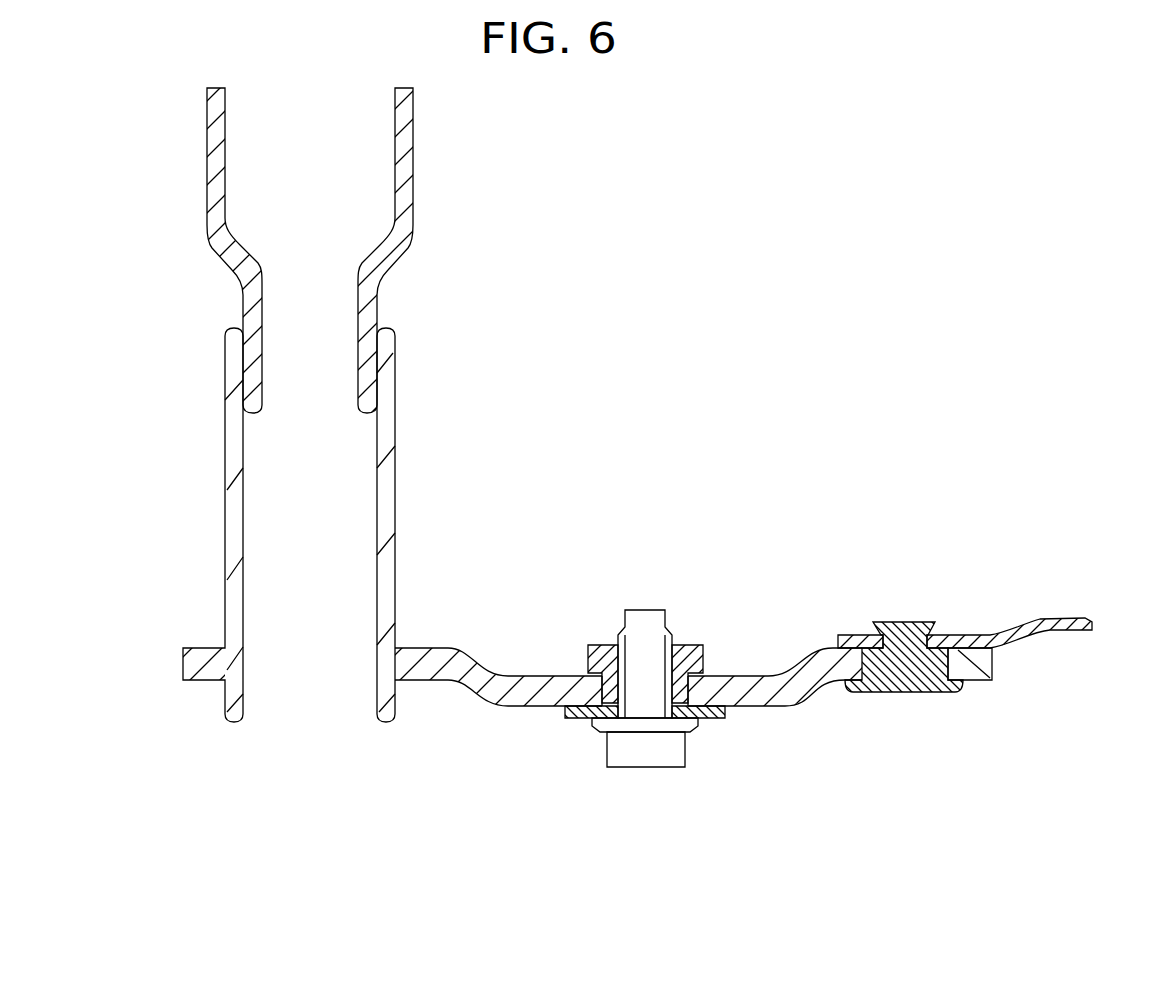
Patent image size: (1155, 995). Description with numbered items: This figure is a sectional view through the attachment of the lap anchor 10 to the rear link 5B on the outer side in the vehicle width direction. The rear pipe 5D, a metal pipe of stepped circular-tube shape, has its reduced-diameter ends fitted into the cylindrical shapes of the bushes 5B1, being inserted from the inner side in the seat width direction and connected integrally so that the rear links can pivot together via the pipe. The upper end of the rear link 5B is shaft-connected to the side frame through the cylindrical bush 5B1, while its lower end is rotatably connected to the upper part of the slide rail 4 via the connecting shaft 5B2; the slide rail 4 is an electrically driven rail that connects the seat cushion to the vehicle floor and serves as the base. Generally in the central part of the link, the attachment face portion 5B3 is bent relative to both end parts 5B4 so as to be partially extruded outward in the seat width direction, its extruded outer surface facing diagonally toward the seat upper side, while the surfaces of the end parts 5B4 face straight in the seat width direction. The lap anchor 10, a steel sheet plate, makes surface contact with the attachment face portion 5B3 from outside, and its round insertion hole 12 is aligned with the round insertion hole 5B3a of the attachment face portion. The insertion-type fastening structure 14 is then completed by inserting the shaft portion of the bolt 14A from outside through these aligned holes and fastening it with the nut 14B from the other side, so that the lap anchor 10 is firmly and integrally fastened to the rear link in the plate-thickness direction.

The rear pipe 5D is at (400, 147).
The cylindrical bush 5B1 is at (387, 498).
The rear link 5B is at (628, 682).
The end parts 5B4 is at (440, 668).
The attachment face portion 5B3 is at (728, 690).
The insertion hole 5B3a is at (611, 690).
The insertion-type fastening structure 14 is at (662, 603).
The bolt 14A is at (645, 612).
The nut 14B is at (688, 648).
The lap anchor 10 is at (573, 718).
The insertion hole 12 is at (628, 718).
The connecting shaft 5B2 is at (905, 640).
The slide rail 4 is at (1005, 624).